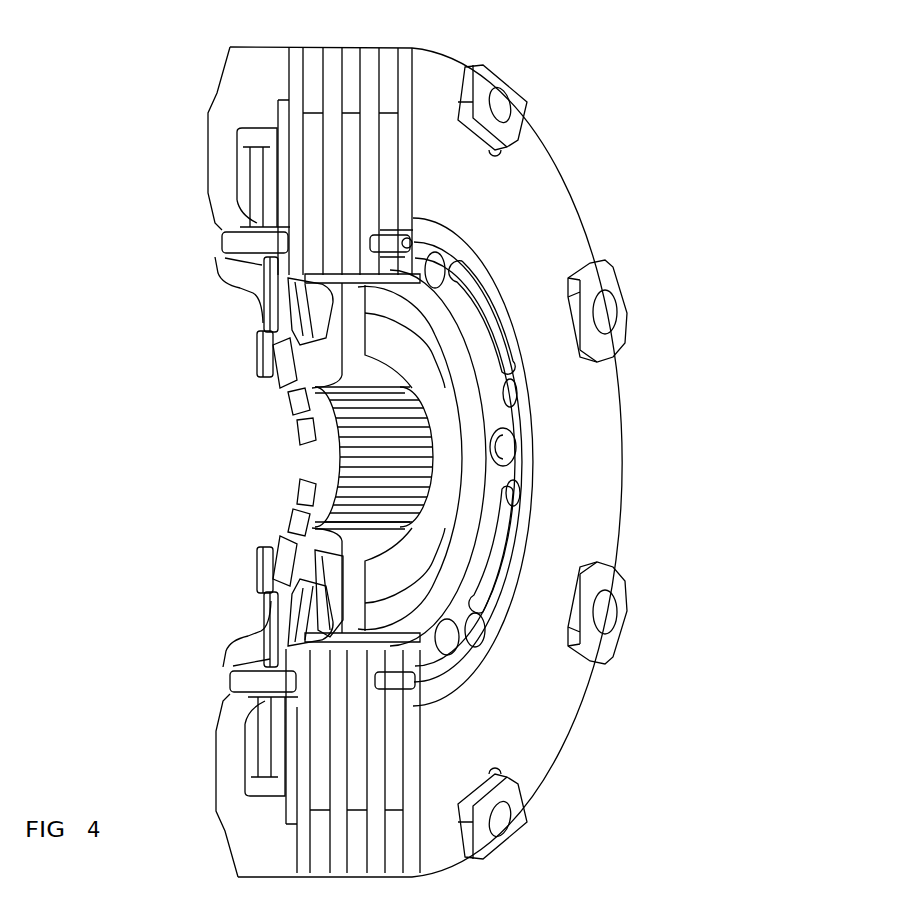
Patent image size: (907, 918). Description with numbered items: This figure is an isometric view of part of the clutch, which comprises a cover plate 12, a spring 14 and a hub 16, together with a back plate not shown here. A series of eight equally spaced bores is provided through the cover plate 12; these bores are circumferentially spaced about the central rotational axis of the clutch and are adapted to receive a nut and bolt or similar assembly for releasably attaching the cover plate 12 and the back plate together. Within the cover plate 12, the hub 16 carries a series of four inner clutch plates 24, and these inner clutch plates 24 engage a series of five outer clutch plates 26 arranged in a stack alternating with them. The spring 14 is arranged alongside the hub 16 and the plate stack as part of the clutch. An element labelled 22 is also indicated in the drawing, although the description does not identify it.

The cover plate 12 is at (232, 117).
The spring 14 is at (253, 358).
The hub 16 is at (357, 548).
The pressure plate 22 is at (515, 422).
The inner clutch plates 24 is at (317, 258).
The outer clutch plates 26 is at (598, 118).